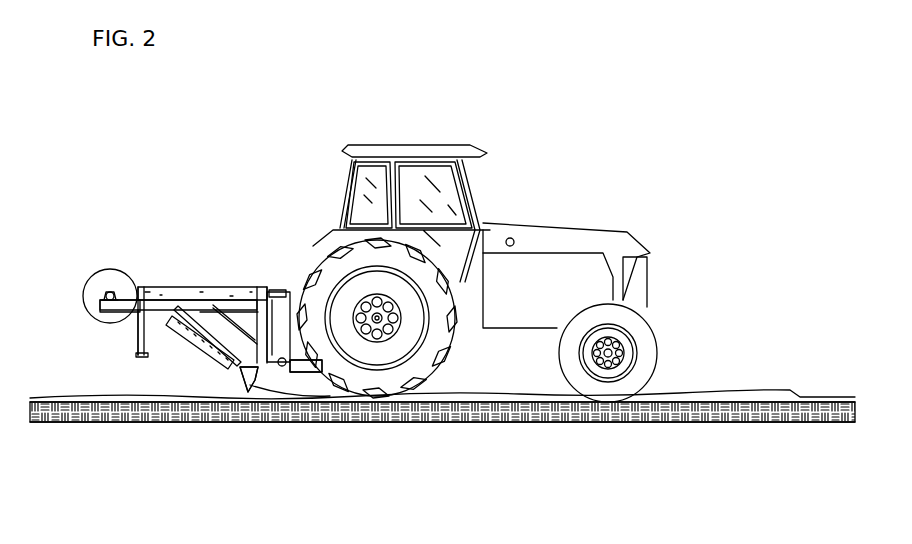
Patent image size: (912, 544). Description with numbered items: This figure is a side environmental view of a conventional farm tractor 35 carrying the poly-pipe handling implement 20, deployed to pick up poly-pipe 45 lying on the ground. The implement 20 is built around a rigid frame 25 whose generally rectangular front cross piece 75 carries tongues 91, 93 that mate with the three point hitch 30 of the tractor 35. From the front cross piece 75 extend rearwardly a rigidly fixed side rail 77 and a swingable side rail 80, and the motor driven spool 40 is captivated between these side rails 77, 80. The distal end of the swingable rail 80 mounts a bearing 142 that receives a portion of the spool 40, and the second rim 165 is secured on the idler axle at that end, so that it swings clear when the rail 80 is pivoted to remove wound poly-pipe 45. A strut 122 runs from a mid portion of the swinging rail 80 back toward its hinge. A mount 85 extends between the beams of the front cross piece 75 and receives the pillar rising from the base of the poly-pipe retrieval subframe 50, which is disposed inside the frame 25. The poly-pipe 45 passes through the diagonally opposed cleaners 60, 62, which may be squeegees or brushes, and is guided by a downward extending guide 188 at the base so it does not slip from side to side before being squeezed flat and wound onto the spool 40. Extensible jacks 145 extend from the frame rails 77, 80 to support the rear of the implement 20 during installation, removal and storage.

The poly-pipe handling implement 20 is at (80, 253).
The rigid frame 25 is at (219, 280).
The three point hitch system 30 is at (312, 378).
The farm tractor 35 is at (515, 196).
The motor driven spool 40 is at (116, 242).
The poly-pipe 45 is at (693, 398).
The poly-pipe retrieval subframe 50 is at (179, 355).
The cleaner 60 is at (203, 355).
The cleaner 62 is at (200, 312).
The front cross piece 75 is at (262, 282).
The side rail 77 is at (174, 288).
The swingable side rail 80 is at (163, 303).
The mount 85 is at (244, 320).
The tongue 91 is at (276, 287).
The tongue 93 is at (273, 366).
The strut 122 is at (213, 305).
The bearing 142 is at (110, 280).
The extensible jack 145 is at (126, 347).
The second rim 165 is at (103, 317).
The guide 188 is at (245, 392).